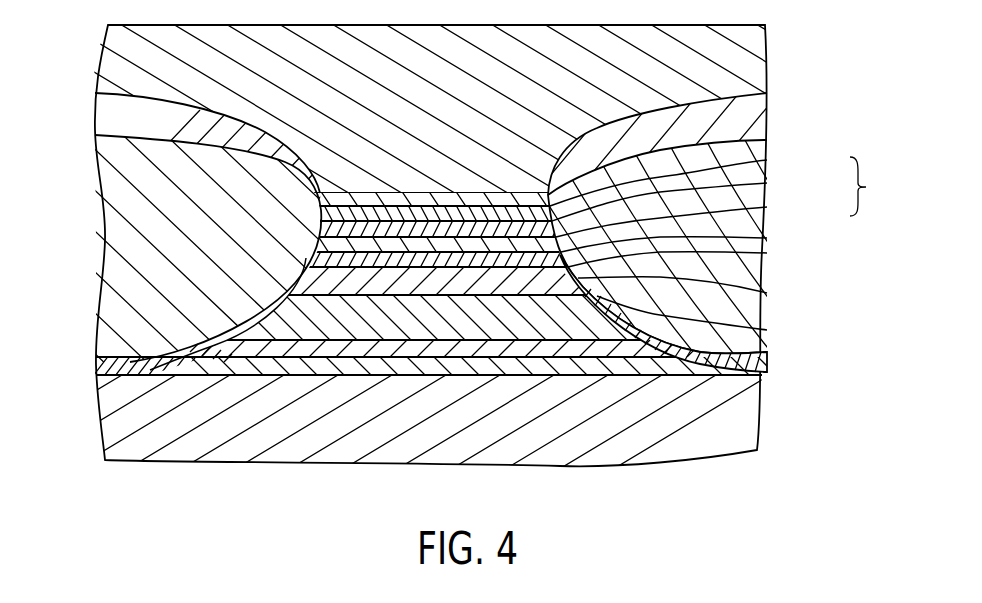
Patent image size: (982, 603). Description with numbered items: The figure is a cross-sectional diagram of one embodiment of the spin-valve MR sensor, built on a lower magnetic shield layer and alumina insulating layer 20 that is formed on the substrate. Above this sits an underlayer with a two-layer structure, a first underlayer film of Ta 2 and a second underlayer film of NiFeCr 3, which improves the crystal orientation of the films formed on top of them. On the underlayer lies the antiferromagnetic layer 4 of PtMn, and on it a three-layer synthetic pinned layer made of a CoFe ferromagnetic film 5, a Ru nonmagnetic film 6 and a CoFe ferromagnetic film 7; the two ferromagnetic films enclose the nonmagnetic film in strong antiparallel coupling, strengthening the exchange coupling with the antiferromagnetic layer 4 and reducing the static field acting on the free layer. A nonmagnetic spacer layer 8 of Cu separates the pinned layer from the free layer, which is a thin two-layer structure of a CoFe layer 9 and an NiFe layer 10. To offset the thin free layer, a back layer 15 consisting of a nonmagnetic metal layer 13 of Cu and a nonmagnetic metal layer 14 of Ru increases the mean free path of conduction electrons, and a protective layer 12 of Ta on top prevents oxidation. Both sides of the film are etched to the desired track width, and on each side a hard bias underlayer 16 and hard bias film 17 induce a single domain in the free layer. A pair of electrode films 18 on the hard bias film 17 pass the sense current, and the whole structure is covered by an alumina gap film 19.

The first underlayer film of Ta 2 is at (673, 364).
The second underlayer film of NiFeCr 3 is at (767, 350).
The antiferromagnetic layer 4 is at (753, 338).
The CoFe ferromagnetic film 5 is at (584, 284).
The Ru nonmagnetic film 6 is at (584, 284).
The CoFe ferromagnetic film 7 is at (767, 298).
The nonmagnetic spacer layer 8 is at (765, 252).
The CoFe layer 9 is at (582, 229).
The NiFe layer 10 is at (768, 206).
The protective layer 12 is at (768, 140).
The nonmagnetic metal layer of Cu 13 is at (768, 183).
The nonmagnetic metal layer of Ru 14 is at (768, 152).
The back layer 15 is at (879, 186).
The hard bias underlayer 16 is at (112, 366).
The hard bias film 17 is at (128, 217).
The electrode films 18 is at (112, 119).
The alumina gap film 19 is at (413, 102).
The lower magnetic shield layer and alumina insulating layer 20 is at (417, 438).